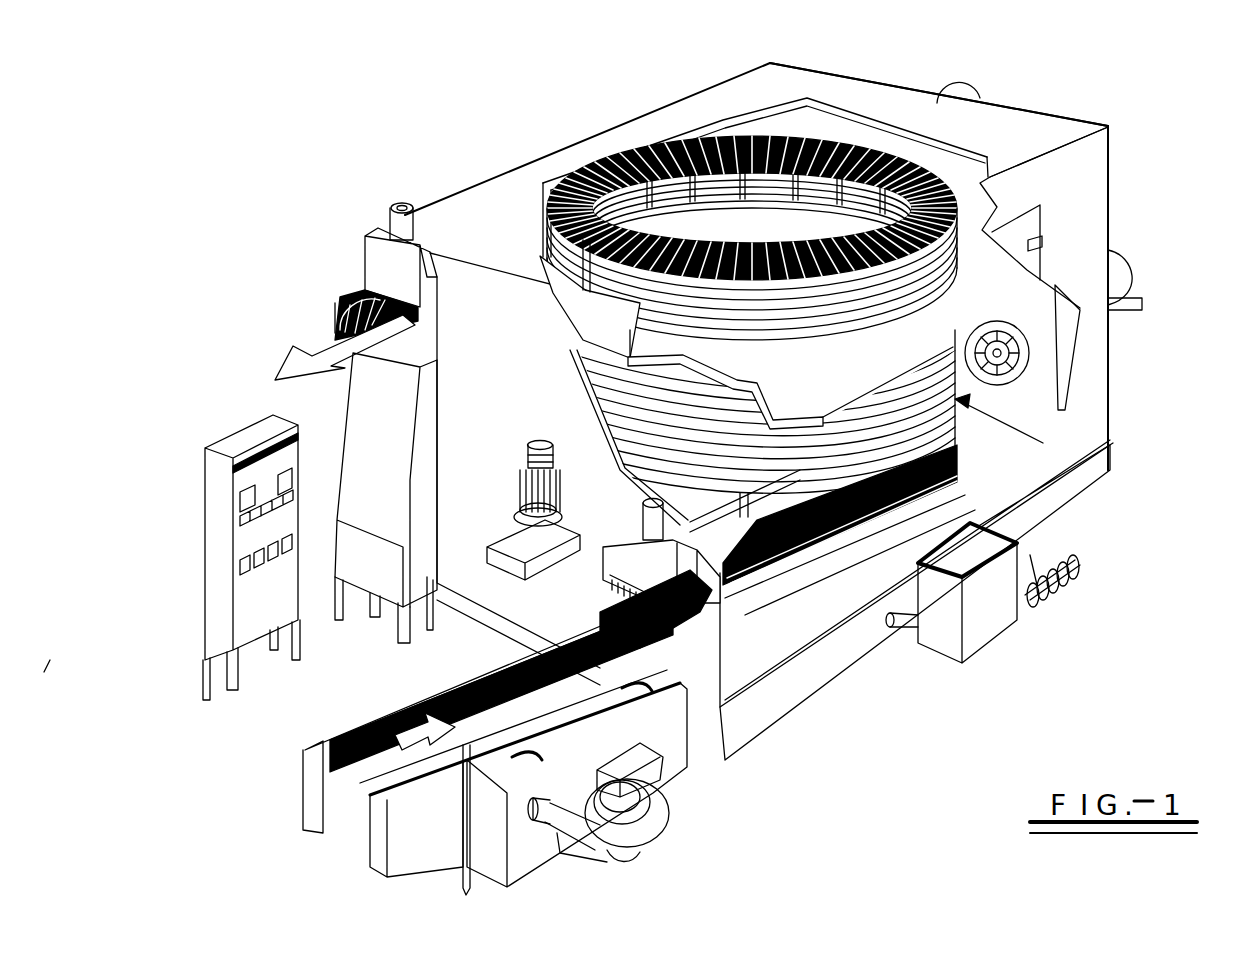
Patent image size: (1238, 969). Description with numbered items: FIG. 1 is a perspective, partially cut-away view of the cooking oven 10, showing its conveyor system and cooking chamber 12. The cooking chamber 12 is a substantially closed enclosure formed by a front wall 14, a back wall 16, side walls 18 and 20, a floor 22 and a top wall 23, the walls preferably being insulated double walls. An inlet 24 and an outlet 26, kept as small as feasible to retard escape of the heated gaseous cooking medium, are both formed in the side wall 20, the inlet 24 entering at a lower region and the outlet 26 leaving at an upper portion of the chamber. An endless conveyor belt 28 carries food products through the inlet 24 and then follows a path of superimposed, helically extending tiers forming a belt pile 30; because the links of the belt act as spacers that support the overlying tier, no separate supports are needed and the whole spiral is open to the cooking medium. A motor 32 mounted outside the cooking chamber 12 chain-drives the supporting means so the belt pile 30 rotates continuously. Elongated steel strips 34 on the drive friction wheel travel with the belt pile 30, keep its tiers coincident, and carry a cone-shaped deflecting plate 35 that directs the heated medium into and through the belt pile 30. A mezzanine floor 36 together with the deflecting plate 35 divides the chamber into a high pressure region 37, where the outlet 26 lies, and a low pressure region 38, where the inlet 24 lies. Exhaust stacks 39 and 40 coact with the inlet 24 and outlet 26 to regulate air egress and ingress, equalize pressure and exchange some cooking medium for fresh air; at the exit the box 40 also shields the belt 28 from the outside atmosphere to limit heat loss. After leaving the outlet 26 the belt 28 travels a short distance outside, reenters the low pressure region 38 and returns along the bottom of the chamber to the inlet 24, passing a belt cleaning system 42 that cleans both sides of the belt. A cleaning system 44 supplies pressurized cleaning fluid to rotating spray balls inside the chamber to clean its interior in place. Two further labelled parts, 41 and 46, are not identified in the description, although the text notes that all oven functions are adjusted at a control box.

The cooking oven 10 is at (478, 128).
The cooking chamber 12 is at (648, 130).
The front wall 14 is at (1090, 190).
The back wall 16 is at (720, 90).
The side wall 18 is at (1048, 110).
The side wall 20 is at (522, 386).
The floor 22 is at (973, 480).
The top wall 23 is at (876, 97).
The inlet 24 is at (703, 608).
The outlet 26 is at (340, 282).
The endless conveyor belt 28 is at (440, 705).
The belt pile 30 is at (1043, 443).
The motor 32 is at (527, 475).
The elongated steel strips 34 is at (846, 212).
The deflecting plate 35 is at (765, 240).
The mezzanine floor 36 is at (817, 386).
The high pressure region 37 is at (1075, 342).
The low pressure region 38 is at (1048, 384).
The exhaust stack 39 is at (378, 265).
The exhaust stack 40 is at (635, 556).
The exhaust duct 41 is at (384, 461).
The belt cleaning system 42 is at (680, 812).
The cleaning system 44 is at (1008, 630).
The control cabinet 46 is at (245, 440).